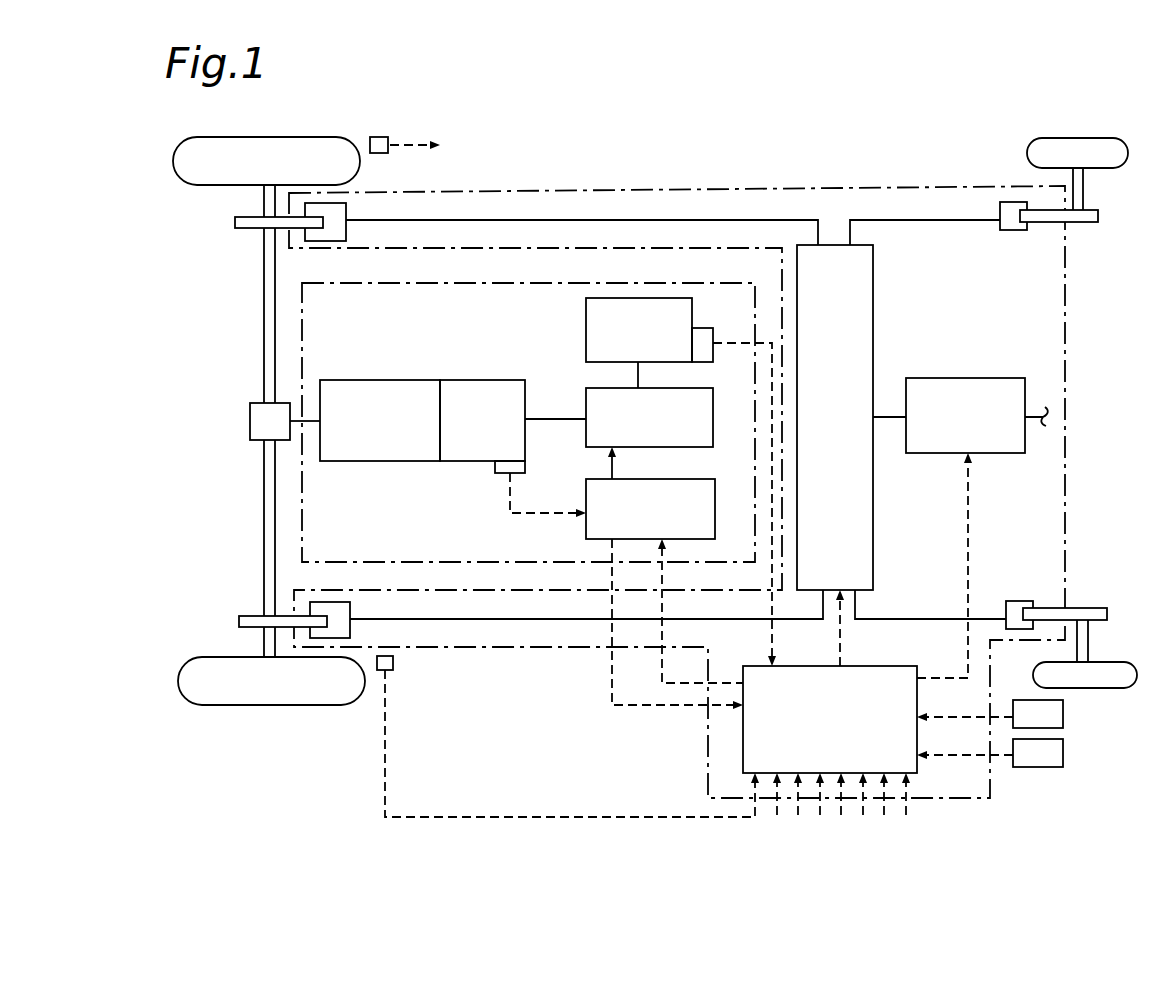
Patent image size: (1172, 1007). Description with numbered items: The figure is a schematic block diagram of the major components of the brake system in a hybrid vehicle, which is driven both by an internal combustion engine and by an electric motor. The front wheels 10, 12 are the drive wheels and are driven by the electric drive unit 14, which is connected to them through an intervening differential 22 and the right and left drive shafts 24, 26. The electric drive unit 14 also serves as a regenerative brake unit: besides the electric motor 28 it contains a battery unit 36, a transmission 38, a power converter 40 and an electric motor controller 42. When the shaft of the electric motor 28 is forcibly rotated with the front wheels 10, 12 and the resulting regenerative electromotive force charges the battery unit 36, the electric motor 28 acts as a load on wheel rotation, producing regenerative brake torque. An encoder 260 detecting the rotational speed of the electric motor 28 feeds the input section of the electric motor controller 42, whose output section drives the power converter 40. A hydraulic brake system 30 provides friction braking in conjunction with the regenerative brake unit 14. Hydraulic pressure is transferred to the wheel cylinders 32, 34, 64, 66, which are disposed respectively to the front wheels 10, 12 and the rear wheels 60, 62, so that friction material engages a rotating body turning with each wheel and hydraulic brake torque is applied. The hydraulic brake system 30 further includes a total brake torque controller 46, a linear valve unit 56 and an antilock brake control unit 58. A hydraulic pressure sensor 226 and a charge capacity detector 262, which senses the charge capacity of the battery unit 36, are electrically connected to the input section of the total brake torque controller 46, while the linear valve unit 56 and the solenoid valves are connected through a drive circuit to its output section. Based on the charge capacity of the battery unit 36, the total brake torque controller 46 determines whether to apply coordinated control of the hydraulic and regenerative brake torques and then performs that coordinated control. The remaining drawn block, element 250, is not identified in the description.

The front wheel 10 is at (206, 186).
The front wheel 12 is at (213, 656).
The electric drive unit 14 is at (370, 283).
The differential 22 is at (250, 421).
The drive shaft 24 is at (262, 283).
The drive shaft 26 is at (266, 537).
The electric motor 28 is at (472, 380).
The hydraulic brake system 30 is at (826, 185).
The wheel cylinder 32 is at (346, 215).
The wheel cylinder 34 is at (350, 614).
The battery unit 36 is at (586, 330).
The transmission 38 is at (378, 380).
The power converter 40 is at (586, 387).
The electric motor controller 42 is at (586, 528).
The total brake torque controller 46 is at (858, 666).
The linear valve unit 56 is at (968, 378).
The antilock brake control unit 58 is at (873, 272).
The wheel 60 is at (1100, 138).
The wheel 62 is at (1110, 662).
The wheel cylinder 64 is at (1012, 230).
The wheel cylinder 66 is at (1018, 601).
The hydraulic pressure sensor 226 is at (1063, 752).
The sensor 250 is at (1063, 713).
The encoder 260 is at (495, 468).
The charge capacity detector 262 is at (705, 328).